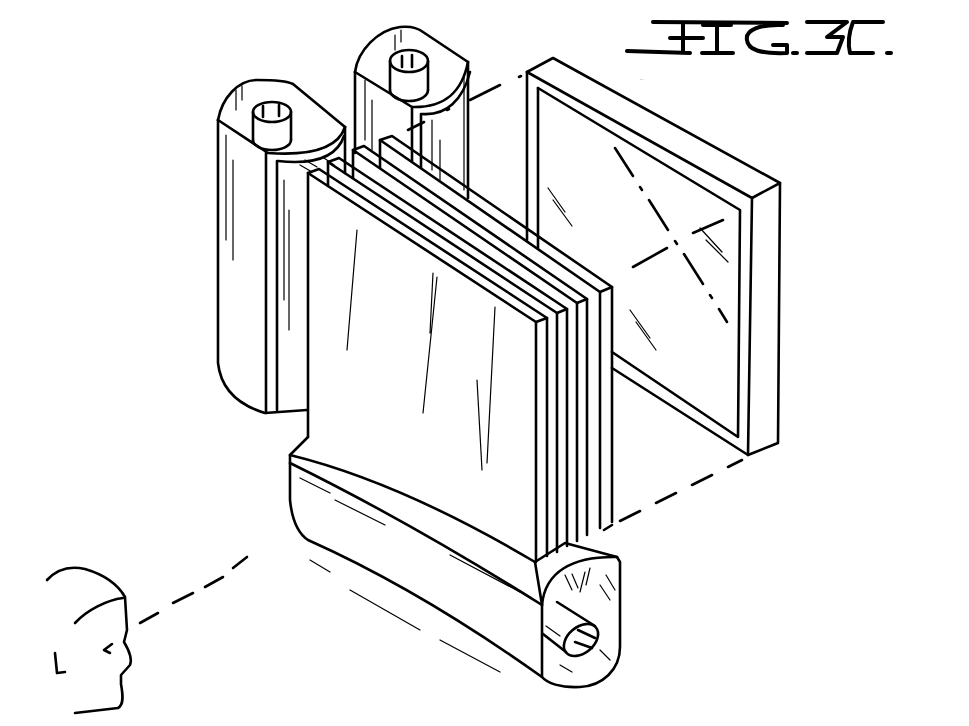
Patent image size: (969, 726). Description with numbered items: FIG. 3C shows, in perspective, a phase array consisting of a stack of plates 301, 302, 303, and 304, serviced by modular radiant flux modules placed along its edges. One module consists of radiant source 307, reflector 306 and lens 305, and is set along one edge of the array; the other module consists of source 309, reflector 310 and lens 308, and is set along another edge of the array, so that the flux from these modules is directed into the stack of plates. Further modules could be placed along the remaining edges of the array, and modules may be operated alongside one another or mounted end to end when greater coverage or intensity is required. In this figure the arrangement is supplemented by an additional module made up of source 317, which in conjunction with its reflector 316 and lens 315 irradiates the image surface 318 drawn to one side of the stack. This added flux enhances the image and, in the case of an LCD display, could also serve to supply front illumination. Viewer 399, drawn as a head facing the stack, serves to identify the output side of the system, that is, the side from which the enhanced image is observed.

The plate 301 is at (612, 435).
The plate 302 is at (588, 467).
The plate 303 is at (567, 495).
The plate 304 is at (546, 528).
The lens 305 is at (280, 274).
The reflector 306 is at (217, 203).
The radiant source 307 is at (250, 118).
The lens 308 is at (619, 561).
The source 309 is at (597, 633).
The reflector 310 is at (428, 606).
The lens 315 is at (468, 76).
The reflector 316 is at (374, 35).
The source 317 is at (408, 128).
The image surface 318 is at (727, 322).
The viewer 399 is at (90, 571).